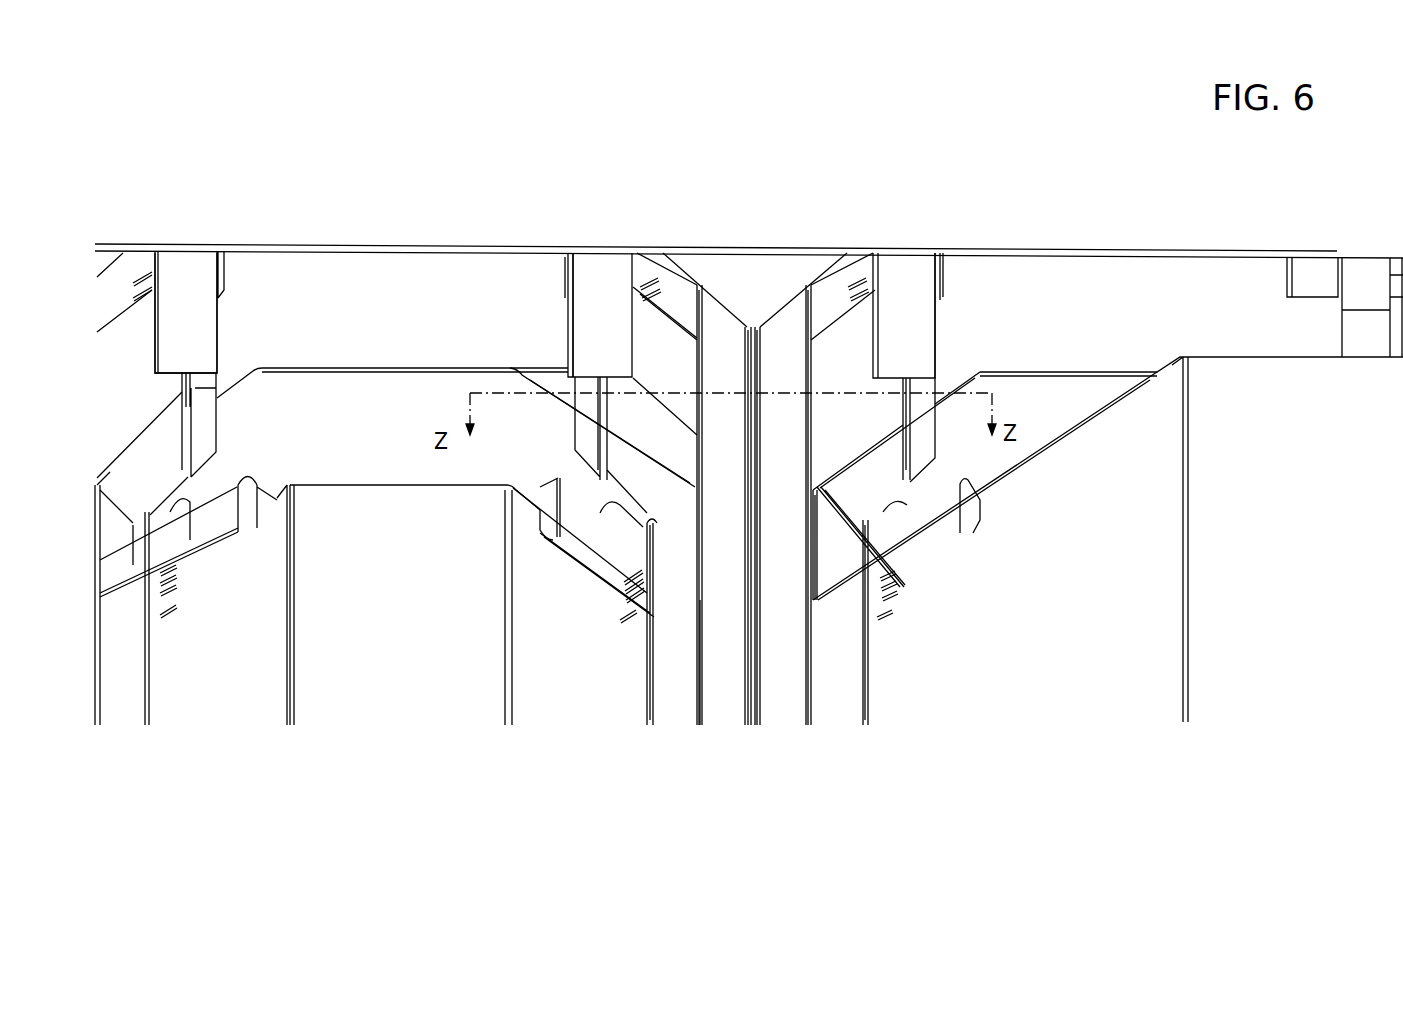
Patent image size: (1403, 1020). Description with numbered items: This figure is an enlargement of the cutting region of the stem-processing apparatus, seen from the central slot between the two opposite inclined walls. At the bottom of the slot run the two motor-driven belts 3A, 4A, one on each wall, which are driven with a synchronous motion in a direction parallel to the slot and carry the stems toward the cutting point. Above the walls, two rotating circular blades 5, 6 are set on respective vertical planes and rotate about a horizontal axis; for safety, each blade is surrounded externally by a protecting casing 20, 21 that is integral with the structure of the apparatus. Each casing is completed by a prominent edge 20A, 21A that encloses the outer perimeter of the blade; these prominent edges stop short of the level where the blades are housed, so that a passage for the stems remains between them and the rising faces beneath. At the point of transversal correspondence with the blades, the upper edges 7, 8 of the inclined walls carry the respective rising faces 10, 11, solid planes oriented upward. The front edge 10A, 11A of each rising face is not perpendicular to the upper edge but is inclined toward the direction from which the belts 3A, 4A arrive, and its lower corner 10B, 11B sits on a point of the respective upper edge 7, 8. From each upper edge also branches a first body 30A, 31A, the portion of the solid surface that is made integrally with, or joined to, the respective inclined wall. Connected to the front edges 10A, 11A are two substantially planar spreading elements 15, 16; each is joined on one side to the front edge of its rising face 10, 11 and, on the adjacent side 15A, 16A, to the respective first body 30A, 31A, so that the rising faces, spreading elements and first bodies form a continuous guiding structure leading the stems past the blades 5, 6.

The protecting casing 20 is at (572, 337).
The prominent edge 20A is at (590, 291).
The rotating circular blade 5 is at (601, 385).
The protecting casing 21 is at (935, 320).
The prominent edge 21A is at (895, 308).
The rotating circular blade 6 is at (906, 387).
The rising face 10 is at (645, 407).
The front edge 10A is at (651, 437).
The spreading element 15 is at (693, 487).
The lower corner 10B is at (650, 468).
The adjacent side 15A is at (678, 515).
The motor-driven belt 3A is at (713, 613).
The upper edge 7 is at (703, 702).
The first body 30A is at (688, 573).
The motor-driven belt 4A is at (780, 655).
The upper edge 8 is at (815, 721).
The rising face 11 is at (840, 423).
The front edge 11A is at (842, 459).
The spreading element 16 is at (820, 482).
The lower corner 11B is at (862, 497).
The adjacent side 16A is at (840, 522).
The first body 31A is at (827, 558).